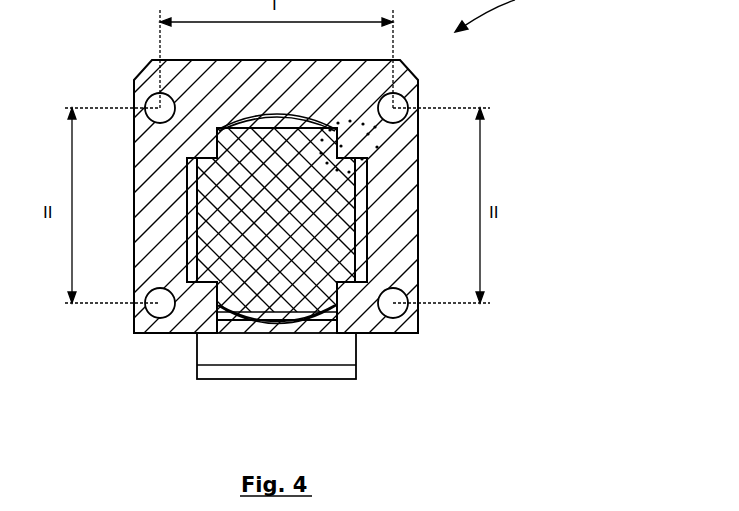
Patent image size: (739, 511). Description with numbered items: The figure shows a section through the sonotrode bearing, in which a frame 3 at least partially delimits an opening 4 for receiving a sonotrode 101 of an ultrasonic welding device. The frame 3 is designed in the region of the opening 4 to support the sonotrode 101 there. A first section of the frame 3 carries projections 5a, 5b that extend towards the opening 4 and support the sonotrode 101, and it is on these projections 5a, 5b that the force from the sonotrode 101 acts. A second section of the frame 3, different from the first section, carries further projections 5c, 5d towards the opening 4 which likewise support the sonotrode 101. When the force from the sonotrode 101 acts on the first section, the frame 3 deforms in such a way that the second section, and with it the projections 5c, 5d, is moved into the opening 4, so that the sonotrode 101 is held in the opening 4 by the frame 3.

The frame 3 is at (141, 72).
The opening 4 is at (279, 219).
The projection 5a is at (199, 143).
The projection 5b is at (371, 146).
The projection 5c is at (199, 307).
The projection 5d is at (354, 307).
The sonotrode 101 is at (325, 353).